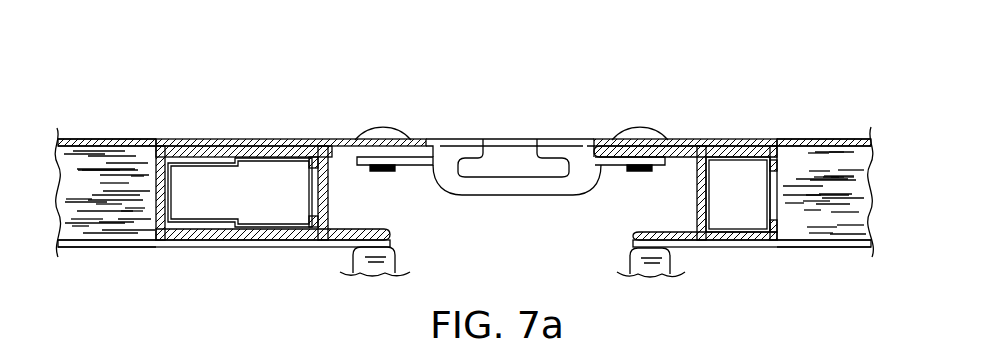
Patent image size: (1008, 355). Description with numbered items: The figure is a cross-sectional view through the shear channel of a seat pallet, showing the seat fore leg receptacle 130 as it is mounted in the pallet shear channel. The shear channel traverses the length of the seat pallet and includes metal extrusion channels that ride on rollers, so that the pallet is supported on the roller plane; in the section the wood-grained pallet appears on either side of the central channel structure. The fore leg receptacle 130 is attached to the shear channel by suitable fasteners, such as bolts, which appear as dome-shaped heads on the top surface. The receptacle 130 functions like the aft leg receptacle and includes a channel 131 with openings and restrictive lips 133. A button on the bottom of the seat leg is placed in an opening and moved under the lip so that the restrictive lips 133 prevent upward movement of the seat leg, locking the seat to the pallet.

The fore leg receptacle 130 is at (568, 128).
The channel 131 is at (515, 143).
The restrictive lip 133 is at (466, 140).